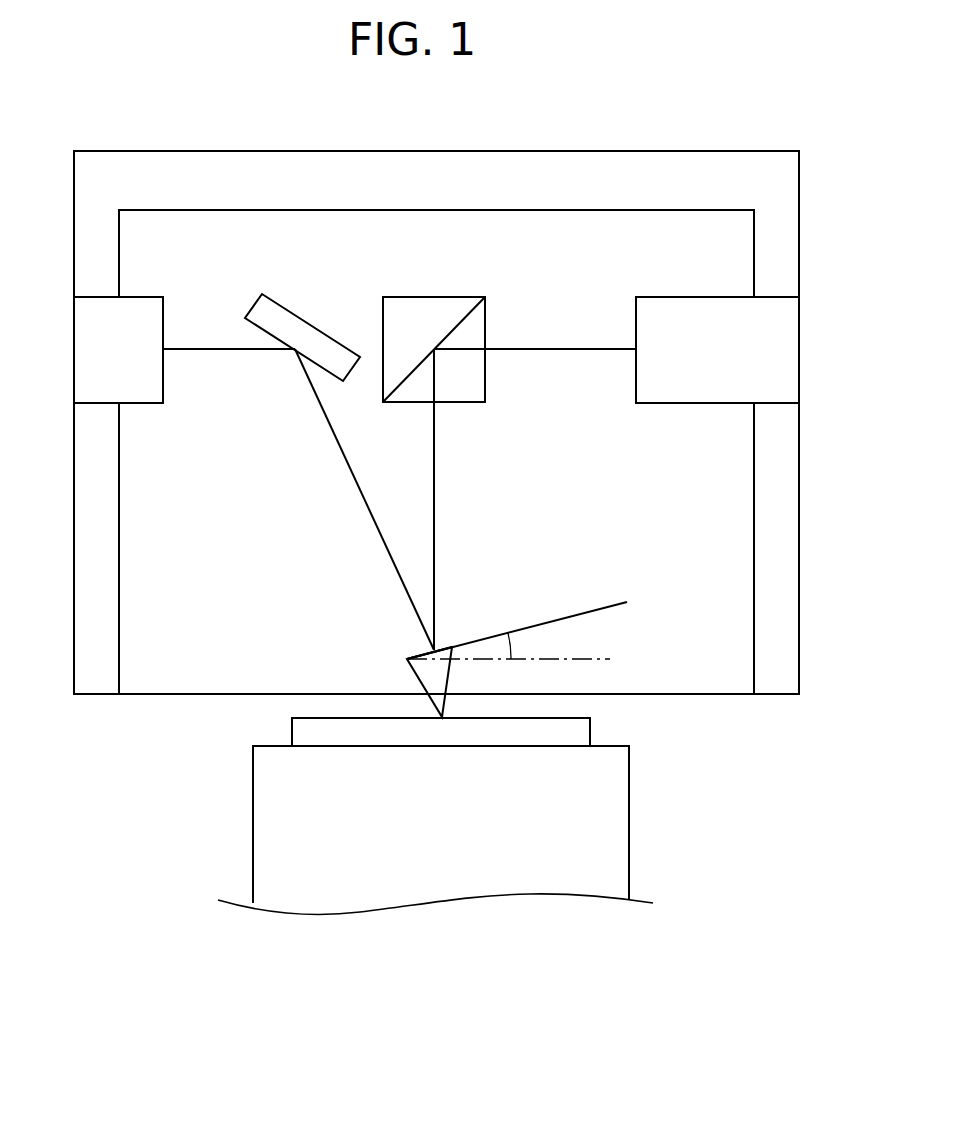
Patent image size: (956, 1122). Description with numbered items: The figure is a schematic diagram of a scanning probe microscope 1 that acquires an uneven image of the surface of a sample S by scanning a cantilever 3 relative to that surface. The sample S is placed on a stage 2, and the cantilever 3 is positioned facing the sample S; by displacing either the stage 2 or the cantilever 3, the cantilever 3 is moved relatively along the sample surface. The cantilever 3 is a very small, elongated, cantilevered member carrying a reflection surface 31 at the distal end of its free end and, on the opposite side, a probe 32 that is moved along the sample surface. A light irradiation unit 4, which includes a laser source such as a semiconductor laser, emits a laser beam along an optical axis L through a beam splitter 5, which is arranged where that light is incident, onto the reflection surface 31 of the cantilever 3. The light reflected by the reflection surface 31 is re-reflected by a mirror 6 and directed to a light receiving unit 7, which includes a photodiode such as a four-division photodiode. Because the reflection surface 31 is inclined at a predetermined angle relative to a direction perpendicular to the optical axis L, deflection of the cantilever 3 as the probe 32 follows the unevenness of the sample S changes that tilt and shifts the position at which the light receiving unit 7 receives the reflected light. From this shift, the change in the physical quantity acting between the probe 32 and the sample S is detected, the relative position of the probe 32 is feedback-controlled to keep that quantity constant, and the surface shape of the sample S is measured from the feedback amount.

The scanning probe microscope 1 is at (737, 108).
The stage 2 is at (629, 833).
The cantilever 3 is at (570, 617).
The reflection surface 31 is at (433, 648).
The probe 32 is at (420, 684).
The light irradiation unit 4 is at (692, 403).
The beam splitter 5 is at (456, 297).
The mirror 6 is at (297, 313).
The light receiving unit 7 is at (137, 403).
The optical axis L is at (434, 513).
The sample S is at (590, 728).